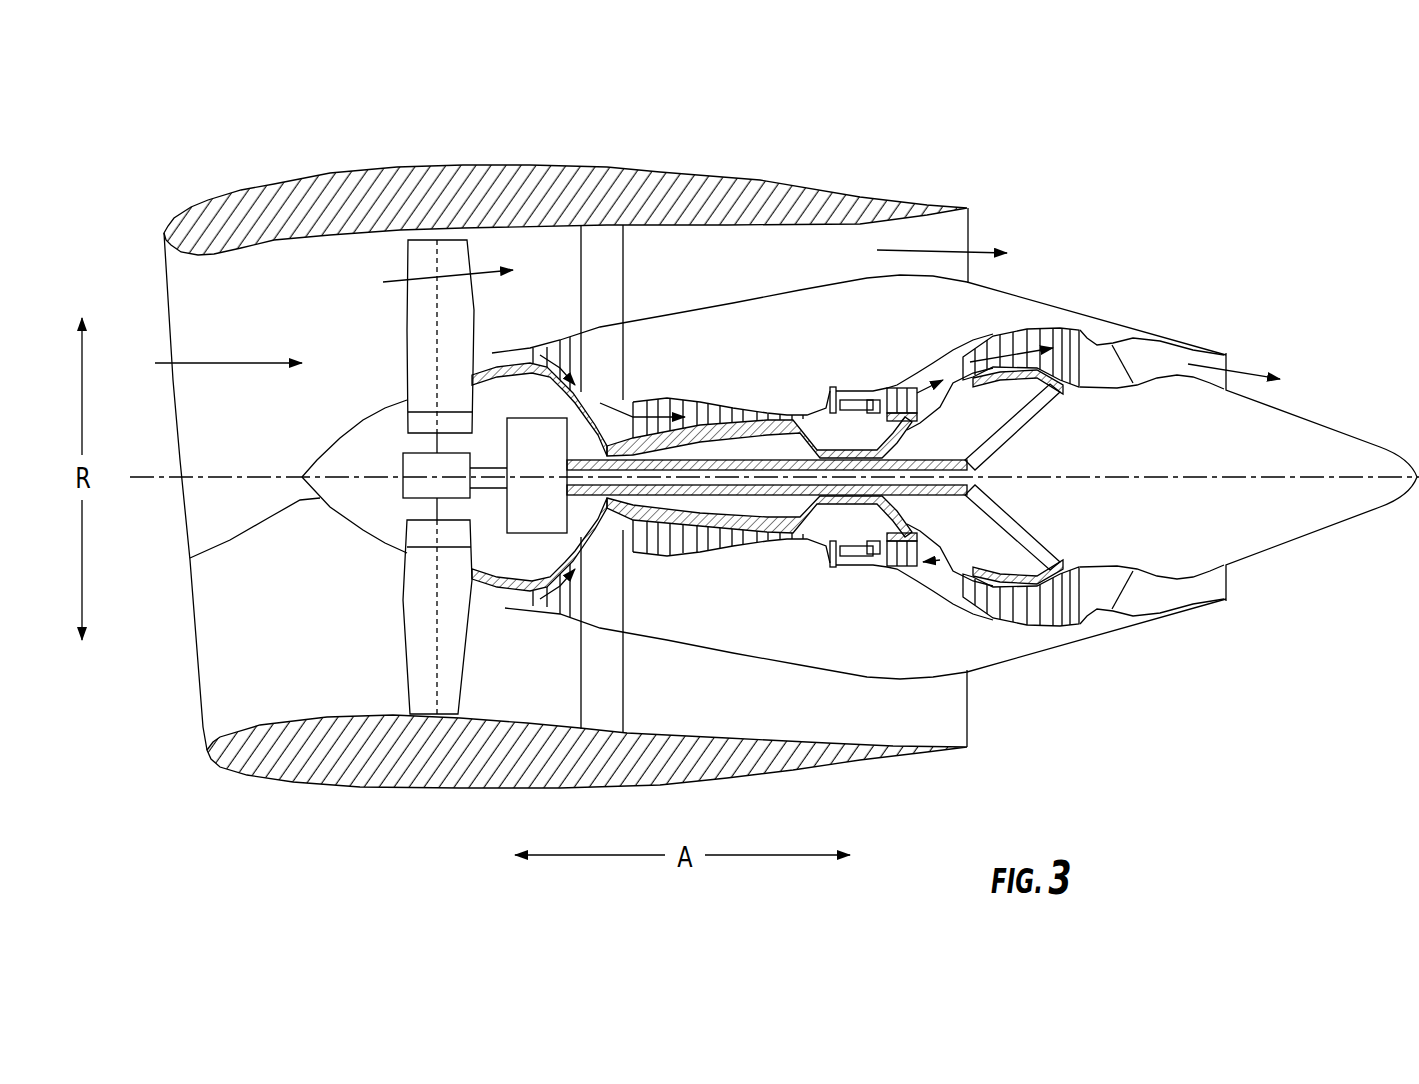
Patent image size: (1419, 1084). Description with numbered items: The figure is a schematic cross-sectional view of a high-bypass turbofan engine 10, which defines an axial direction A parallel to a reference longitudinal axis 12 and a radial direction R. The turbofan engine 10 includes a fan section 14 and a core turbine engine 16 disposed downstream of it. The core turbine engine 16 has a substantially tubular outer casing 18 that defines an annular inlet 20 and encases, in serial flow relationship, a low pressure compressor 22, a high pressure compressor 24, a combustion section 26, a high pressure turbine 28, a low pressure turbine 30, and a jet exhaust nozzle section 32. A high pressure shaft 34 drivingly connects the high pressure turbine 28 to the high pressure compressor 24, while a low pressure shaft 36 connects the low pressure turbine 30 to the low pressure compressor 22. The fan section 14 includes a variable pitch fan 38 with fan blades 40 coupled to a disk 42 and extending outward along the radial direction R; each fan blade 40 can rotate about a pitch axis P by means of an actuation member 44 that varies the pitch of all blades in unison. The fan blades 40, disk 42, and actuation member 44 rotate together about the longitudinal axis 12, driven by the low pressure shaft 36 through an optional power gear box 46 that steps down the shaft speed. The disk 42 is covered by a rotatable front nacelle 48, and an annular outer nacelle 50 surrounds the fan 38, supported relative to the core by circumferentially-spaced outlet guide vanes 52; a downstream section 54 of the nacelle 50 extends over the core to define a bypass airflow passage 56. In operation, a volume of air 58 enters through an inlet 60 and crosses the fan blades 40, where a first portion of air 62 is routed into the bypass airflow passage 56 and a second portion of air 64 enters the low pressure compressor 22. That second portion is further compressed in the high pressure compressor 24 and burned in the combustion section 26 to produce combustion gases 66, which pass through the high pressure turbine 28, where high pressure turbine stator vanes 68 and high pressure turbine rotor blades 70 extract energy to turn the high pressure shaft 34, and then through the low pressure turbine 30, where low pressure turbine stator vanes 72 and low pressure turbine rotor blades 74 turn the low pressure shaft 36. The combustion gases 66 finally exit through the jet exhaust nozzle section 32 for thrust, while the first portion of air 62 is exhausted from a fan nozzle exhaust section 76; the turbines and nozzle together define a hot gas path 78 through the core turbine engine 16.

The turbofan engine 10 is at (1132, 183).
The longitudinal axis 12 is at (1157, 477).
The fan section 14 is at (360, 263).
The core turbine engine 16 is at (760, 347).
The outer casing 18 is at (807, 663).
The annular inlet 20 is at (527, 597).
The low pressure compressor 22 is at (583, 557).
The high pressure compressor 24 is at (657, 537).
The combustion section 26 is at (853, 550).
The high pressure turbine 28 is at (960, 553).
The low pressure turbine 30 is at (1063, 627).
The jet exhaust nozzle section 32 is at (1133, 607).
The high pressure shaft 34 is at (887, 453).
The low pressure shaft 36 is at (993, 443).
The variable pitch fan 38 is at (367, 540).
The fan blades 40 is at (403, 647).
The disk 42 is at (427, 423).
The actuation member 44 is at (403, 460).
The power gear box 46 is at (556, 433).
The front nacelle 48 is at (190, 558).
The outer nacelle 50 is at (460, 790).
The outlet guide vanes 52 is at (623, 260).
The downstream section 54 is at (907, 198).
The bypass airflow passage 56 is at (822, 272).
The volume of air 58 is at (222, 360).
The inlet 60 is at (200, 717).
The first portion of air 62 is at (427, 280).
The second portion of air 64 is at (492, 353).
The combustion gases 66 is at (900, 387).
The HP turbine stator vanes 68 is at (870, 553).
The HP turbine rotor blades 70 is at (900, 527).
The LP turbine stator vanes 72 is at (977, 593).
The LP turbine rotor blades 74 is at (990, 610).
The fan nozzle exhaust section 76 is at (957, 233).
The hot gas path 78 is at (943, 365).
The pitch axis P is at (437, 257).